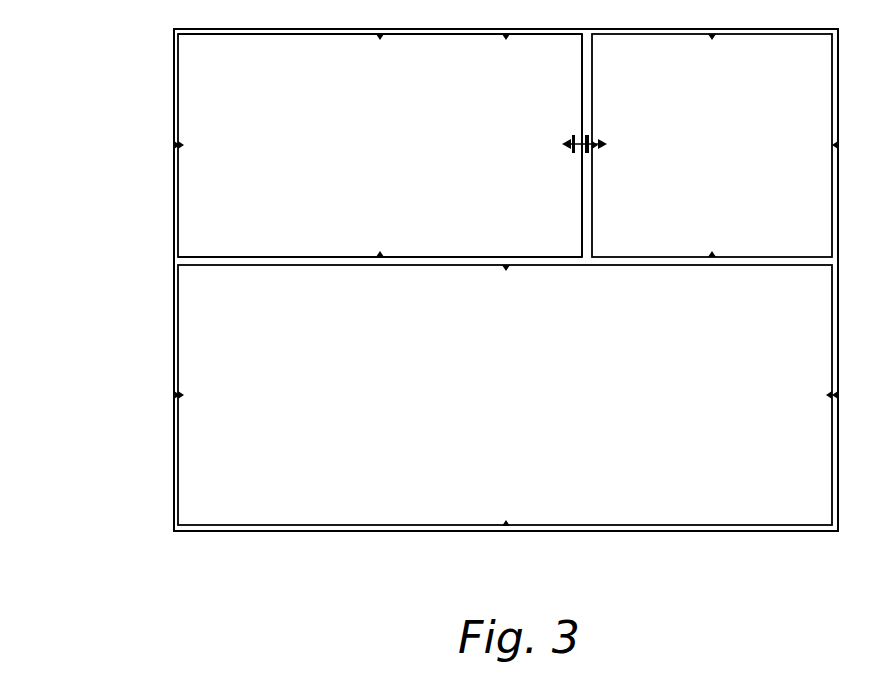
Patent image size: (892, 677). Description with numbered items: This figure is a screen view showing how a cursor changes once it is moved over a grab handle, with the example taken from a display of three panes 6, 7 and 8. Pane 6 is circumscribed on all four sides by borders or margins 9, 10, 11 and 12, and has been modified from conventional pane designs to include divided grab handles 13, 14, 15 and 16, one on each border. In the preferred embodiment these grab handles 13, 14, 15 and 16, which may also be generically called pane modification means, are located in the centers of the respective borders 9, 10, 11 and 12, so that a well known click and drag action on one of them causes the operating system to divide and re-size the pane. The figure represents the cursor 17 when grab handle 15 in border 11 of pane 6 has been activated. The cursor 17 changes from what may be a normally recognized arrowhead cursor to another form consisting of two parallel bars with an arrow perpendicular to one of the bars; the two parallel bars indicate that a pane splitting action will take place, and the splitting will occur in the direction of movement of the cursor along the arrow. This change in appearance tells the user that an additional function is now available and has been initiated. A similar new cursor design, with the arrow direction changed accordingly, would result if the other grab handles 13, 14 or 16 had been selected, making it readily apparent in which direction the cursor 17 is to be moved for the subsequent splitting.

The pane 6 is at (380, 145).
The pane 7 is at (712, 145).
The pane 8 is at (505, 395).
The border 9 is at (150, 94).
The border 10 is at (291, 246).
The border 11 is at (575, 209).
The border 12 is at (540, 40).
The divided grab handle 13 is at (190, 144).
The divided grab handle 14 is at (378, 246).
The divided grab handle 15 is at (604, 144).
The divided grab handle 16 is at (378, 40).
The cursor 17 is at (555, 138).